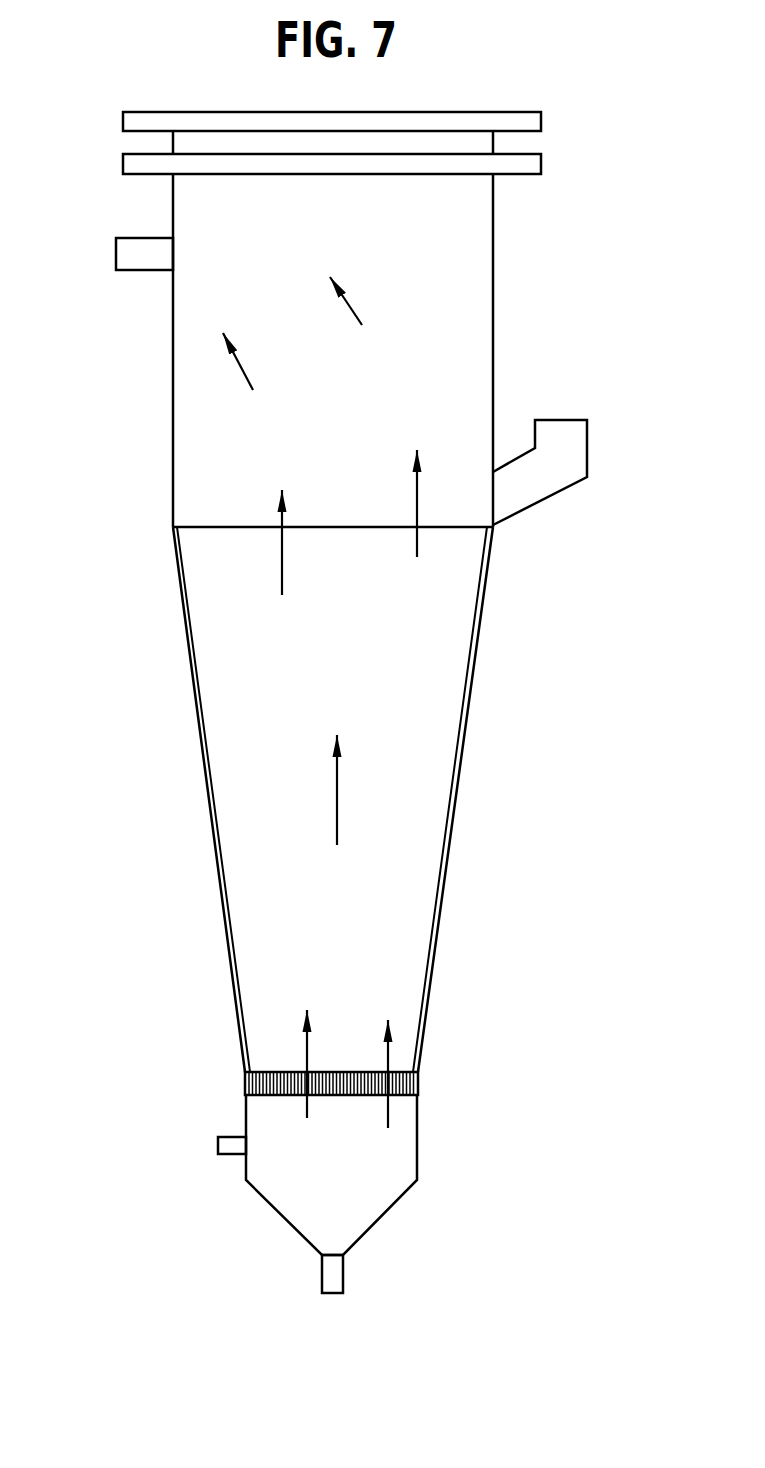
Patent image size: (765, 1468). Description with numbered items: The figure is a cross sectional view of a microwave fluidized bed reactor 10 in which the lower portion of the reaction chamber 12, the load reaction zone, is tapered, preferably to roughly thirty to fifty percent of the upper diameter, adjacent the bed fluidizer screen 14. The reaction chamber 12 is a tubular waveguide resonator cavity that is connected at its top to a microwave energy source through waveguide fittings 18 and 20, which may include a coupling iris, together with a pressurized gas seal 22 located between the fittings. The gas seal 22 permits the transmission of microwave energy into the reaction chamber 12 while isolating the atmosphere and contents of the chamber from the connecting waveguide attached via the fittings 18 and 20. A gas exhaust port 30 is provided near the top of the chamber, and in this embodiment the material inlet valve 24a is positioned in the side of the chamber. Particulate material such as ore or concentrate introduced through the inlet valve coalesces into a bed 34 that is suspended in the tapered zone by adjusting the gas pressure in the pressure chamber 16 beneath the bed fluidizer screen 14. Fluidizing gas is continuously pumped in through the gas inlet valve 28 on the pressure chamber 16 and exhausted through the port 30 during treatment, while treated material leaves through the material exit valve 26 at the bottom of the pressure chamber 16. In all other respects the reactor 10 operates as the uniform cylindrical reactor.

The microwave fluidized bed reactor 10 is at (195, 716).
The reaction chamber 12 is at (173, 380).
The bed fluidizer screen 14 is at (246, 1085).
The pressure chamber 16 is at (280, 1172).
The waveguide fitting 18 is at (541, 121).
The waveguide fitting 20 is at (541, 166).
The pressurized gas seal 22 is at (493, 142).
The material inlet valve 24a is at (562, 420).
The material exit valve 26 is at (343, 1280).
The gas inlet valve 28 is at (218, 1145).
The gas exhaust port 30 is at (116, 252).
The bed 34 is at (222, 657).